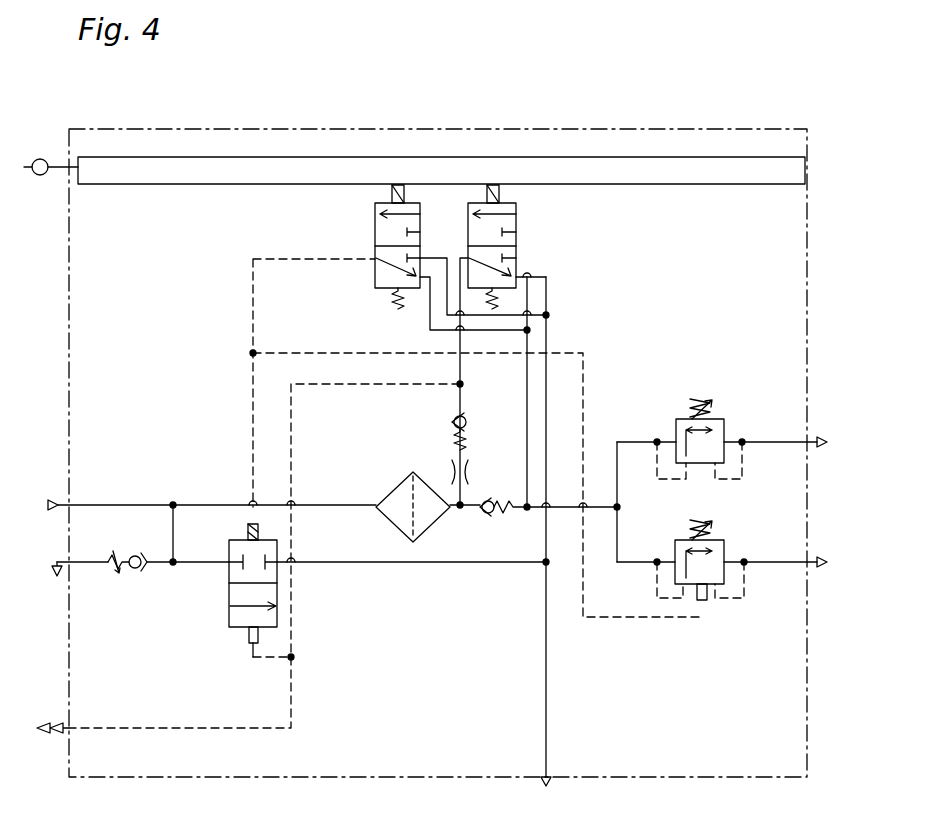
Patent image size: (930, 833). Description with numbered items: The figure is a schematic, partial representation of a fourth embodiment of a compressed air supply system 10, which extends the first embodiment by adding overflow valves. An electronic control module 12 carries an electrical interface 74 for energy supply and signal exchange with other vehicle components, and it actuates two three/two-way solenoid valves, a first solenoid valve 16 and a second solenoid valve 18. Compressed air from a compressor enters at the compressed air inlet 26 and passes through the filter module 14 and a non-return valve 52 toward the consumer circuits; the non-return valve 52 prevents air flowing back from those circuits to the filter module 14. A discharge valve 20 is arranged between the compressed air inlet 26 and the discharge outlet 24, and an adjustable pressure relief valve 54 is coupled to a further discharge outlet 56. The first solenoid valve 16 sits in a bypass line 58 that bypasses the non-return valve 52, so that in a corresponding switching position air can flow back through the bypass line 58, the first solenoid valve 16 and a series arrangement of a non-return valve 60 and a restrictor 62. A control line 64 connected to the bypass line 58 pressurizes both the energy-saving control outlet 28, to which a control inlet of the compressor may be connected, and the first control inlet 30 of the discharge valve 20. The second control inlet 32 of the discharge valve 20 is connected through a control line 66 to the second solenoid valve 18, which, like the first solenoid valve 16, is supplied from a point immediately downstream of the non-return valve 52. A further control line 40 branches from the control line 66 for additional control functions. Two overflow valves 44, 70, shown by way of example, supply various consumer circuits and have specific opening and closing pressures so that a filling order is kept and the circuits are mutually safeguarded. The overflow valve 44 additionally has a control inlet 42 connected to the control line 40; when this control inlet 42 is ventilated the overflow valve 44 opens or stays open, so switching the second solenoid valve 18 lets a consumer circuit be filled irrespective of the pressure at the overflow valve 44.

The compressed air supply system 10 is at (328, 128).
The electronic control module 12 is at (216, 186).
The filter module 14 is at (385, 515).
The first solenoid valve 16 is at (518, 222).
The second solenoid valve 18 is at (372, 226).
The discharge valve 20 is at (228, 594).
The discharge outlet 24 is at (551, 784).
The compressed air inlet 26 is at (48, 499).
The energy-saving control outlet 28 is at (42, 735).
The first control inlet 30 is at (248, 638).
The second control inlet 32 is at (247, 531).
The further control line 40 is at (297, 352).
The control inlet 42 is at (705, 601).
The overflow valve 44 is at (727, 553).
The non-return valve 52 is at (481, 519).
The adjustable pressure relief valve 54 is at (141, 578).
The discharge outlet 56 is at (52, 578).
The bypass line 58 is at (525, 378).
The non-return valve 60 is at (468, 420).
The restrictor 62 is at (470, 471).
The control line 64 is at (293, 408).
The control line 66 is at (252, 393).
The overflow valve 70 is at (725, 427).
The electrical interface 74 is at (41, 157).